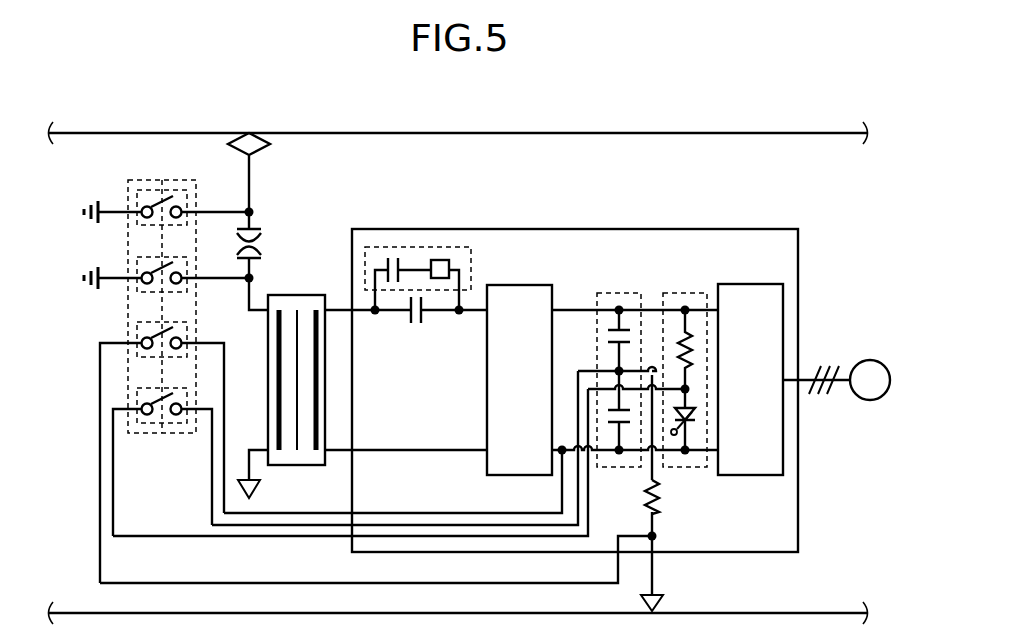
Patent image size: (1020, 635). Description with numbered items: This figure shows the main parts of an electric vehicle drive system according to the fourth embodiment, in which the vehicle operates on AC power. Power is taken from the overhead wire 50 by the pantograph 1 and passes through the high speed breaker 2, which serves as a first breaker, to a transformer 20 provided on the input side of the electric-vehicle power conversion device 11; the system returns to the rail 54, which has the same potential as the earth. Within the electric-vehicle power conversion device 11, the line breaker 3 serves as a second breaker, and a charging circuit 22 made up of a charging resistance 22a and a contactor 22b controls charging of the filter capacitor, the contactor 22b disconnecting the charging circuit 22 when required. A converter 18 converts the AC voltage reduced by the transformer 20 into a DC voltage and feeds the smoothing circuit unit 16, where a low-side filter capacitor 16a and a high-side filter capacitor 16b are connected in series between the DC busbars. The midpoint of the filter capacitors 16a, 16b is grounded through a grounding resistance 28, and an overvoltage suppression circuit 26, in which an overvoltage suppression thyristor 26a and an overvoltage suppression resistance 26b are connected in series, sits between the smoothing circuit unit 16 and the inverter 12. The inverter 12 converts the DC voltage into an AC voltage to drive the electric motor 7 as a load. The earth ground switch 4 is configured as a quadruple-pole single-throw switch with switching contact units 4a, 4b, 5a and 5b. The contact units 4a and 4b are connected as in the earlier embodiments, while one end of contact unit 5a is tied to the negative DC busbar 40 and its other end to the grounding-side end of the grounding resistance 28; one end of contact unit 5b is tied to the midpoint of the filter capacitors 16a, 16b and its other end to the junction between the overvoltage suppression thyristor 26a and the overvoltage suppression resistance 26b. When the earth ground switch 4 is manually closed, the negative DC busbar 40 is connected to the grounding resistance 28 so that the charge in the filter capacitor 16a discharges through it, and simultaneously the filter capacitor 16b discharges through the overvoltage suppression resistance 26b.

The pantograph 1 is at (265, 147).
The high speed breaker 2 is at (262, 243).
The line breaker 3 is at (415, 324).
The earth ground switch 4 is at (148, 180).
The switching contact unit 4a is at (137, 200).
The switching contact unit 4b is at (137, 268).
The switching contact unit 5a is at (137, 335).
The switching contact unit 5b is at (137, 402).
The electric motor 7 is at (868, 360).
The electric-vehicle power conversion device 11 is at (715, 229).
The inverter 12 is at (750, 284).
The smoothing circuit unit 16 is at (615, 293).
The low-side filter capacitor 16a is at (611, 426).
The high-side filter capacitor 16b is at (607, 330).
The converter 18 is at (520, 285).
The transformer 20 is at (297, 295).
The charging circuit 22 is at (370, 247).
The charging resistance 22a is at (441, 260).
The contactor 22b is at (385, 258).
The overvoltage suppression circuit 26 is at (675, 293).
The overvoltage suppression thyristor 26a is at (689, 433).
The overvoltage suppression resistance 26b is at (688, 346).
The grounding resistance 28 is at (655, 514).
The negative DC busbar 40 is at (562, 450).
The overhead wire 50 is at (838, 133).
The rail 54 is at (838, 613).